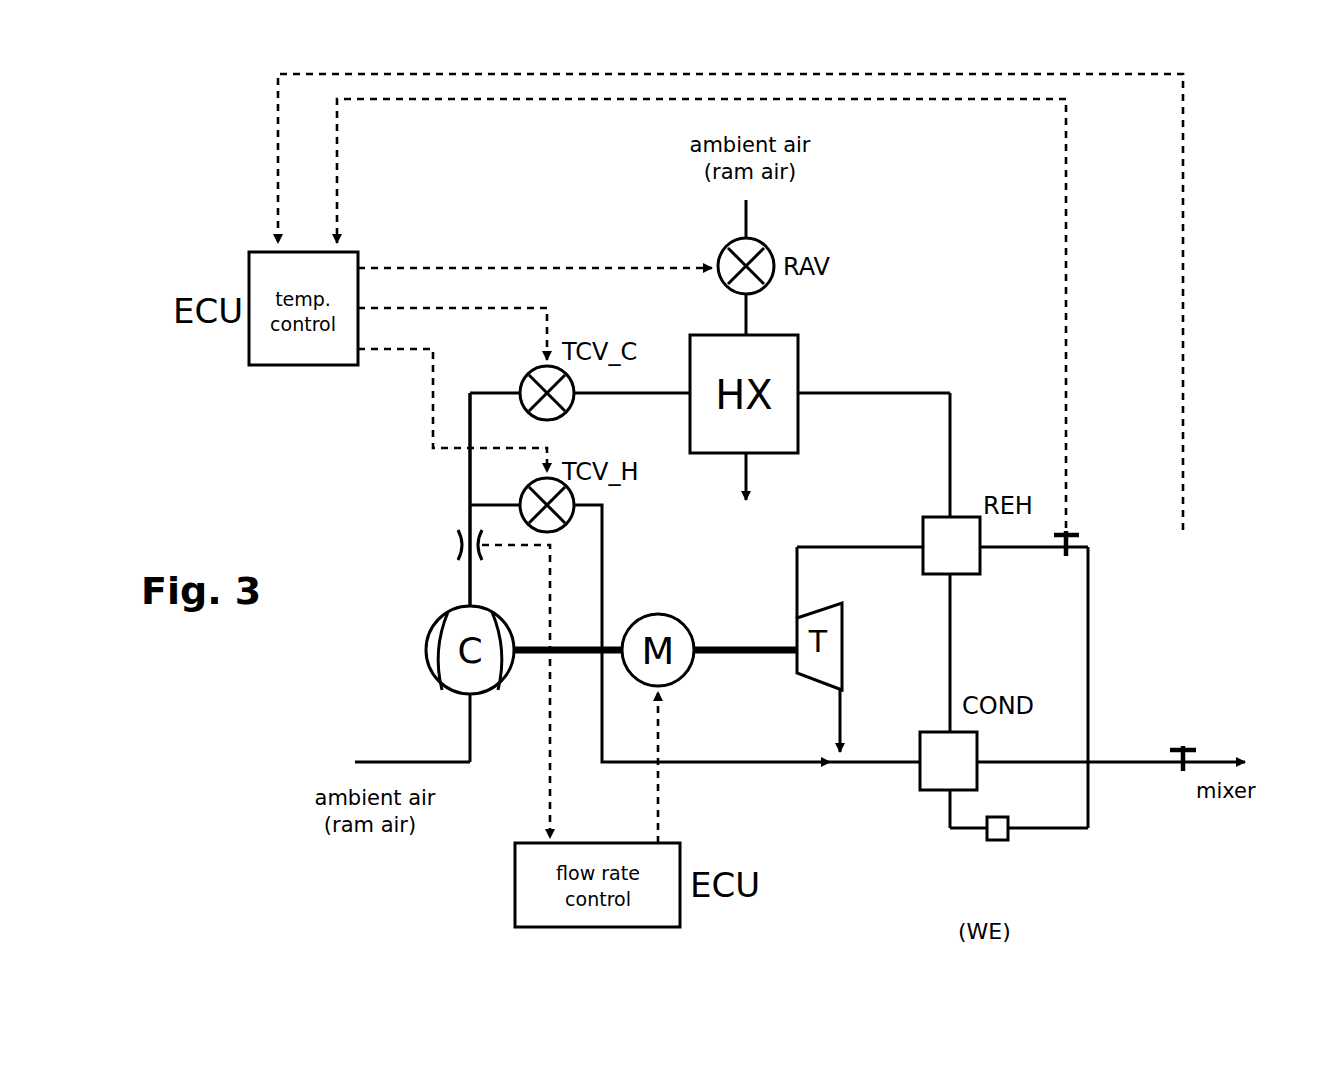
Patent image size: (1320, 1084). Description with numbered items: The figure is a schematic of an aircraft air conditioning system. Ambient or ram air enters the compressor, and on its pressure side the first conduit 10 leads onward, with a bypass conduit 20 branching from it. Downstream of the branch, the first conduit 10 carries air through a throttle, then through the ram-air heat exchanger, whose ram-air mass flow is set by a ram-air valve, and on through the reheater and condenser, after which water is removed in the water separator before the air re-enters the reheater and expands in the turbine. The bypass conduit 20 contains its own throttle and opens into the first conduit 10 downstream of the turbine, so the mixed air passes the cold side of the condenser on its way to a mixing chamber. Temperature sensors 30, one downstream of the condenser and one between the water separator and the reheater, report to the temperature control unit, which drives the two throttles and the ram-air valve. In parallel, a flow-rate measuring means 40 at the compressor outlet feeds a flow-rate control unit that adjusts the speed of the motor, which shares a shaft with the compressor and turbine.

The first conduit 10 is at (470, 452).
The bypass conduit 20 is at (608, 555).
The temperature sensor 30 is at (1081, 534).
The flow-rate measuring means 40 is at (462, 546).